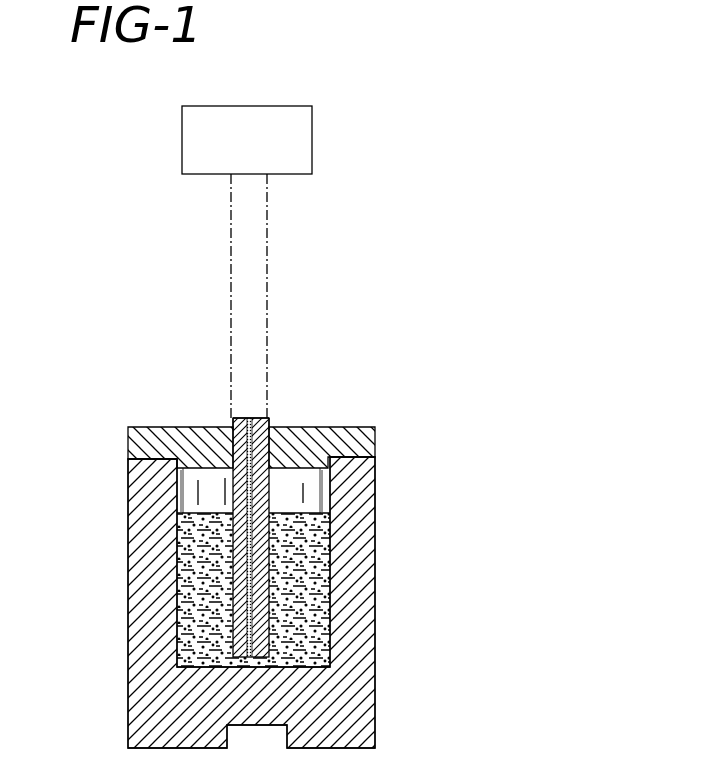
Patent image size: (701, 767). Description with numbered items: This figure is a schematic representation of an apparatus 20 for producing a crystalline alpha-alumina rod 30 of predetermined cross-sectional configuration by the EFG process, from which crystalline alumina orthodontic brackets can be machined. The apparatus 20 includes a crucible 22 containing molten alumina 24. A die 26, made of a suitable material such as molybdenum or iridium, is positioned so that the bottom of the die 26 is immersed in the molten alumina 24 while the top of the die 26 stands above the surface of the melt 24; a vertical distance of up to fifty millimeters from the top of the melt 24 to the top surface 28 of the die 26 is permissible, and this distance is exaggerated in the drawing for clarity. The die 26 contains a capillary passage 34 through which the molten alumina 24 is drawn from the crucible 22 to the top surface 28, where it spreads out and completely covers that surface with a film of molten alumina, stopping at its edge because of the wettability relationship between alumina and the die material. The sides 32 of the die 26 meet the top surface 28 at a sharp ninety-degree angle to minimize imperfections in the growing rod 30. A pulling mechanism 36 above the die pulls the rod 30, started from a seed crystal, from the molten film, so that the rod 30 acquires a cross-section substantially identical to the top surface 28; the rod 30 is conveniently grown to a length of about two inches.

The apparatus 20 is at (110, 524).
The crucible 22 is at (128, 612).
The molten alumina 24 is at (190, 626).
The die 26 is at (272, 418).
The top surface 28 is at (241, 417).
The crystalline alpha-alumina rod 30 is at (268, 267).
The sides 32 is at (233, 417).
The capillary passage 34 is at (249, 418).
The pulling mechanism 36 is at (322, 108).